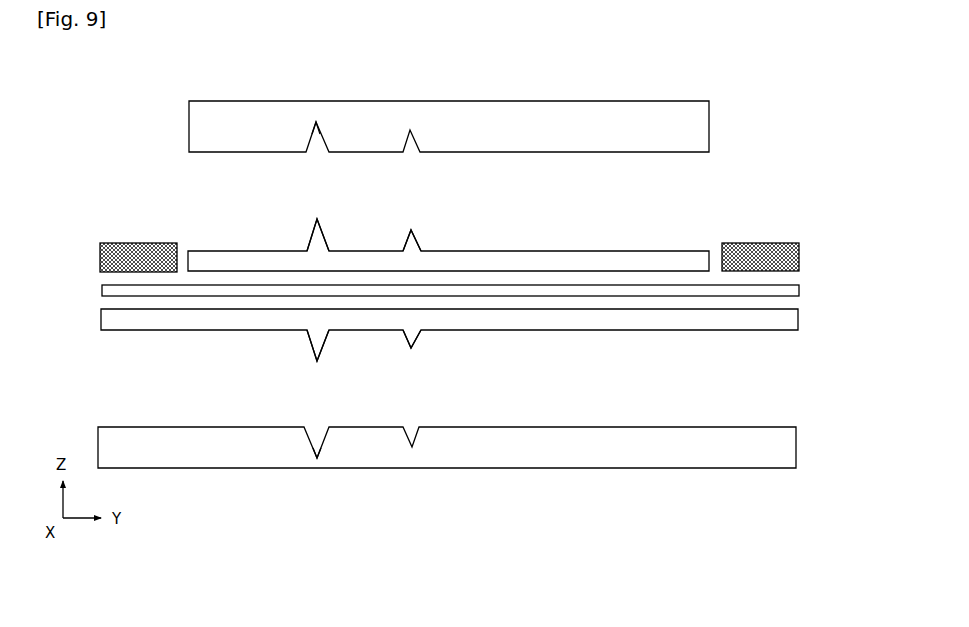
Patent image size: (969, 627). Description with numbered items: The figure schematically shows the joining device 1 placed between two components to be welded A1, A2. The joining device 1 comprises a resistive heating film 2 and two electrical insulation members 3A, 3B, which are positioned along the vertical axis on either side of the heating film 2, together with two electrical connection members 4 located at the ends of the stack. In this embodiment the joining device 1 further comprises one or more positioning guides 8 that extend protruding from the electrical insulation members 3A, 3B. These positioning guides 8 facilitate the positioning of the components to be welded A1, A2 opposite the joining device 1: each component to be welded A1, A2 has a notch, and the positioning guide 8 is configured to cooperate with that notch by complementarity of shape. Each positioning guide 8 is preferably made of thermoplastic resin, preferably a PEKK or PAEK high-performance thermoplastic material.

The joining device 1 is at (456, 258).
The resistive heating film 2 is at (800, 290).
The electrical insulation member 3A is at (799, 318).
The electrical insulation member 3B is at (698, 249).
The electrical connection member 4 is at (100, 257).
The positioning guide 8 is at (325, 236).
The component to be welded A1 is at (797, 450).
The component to be welded A2 is at (411, 101).